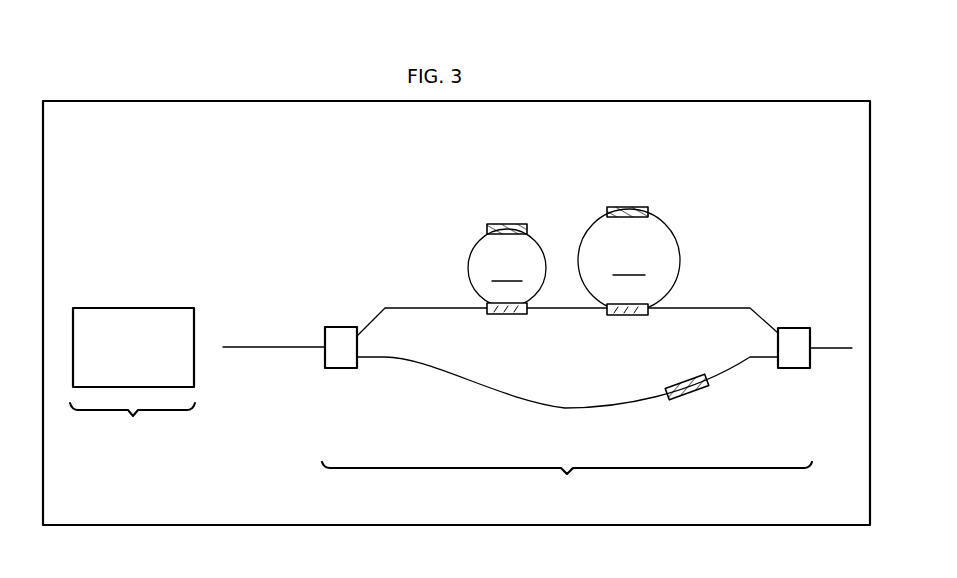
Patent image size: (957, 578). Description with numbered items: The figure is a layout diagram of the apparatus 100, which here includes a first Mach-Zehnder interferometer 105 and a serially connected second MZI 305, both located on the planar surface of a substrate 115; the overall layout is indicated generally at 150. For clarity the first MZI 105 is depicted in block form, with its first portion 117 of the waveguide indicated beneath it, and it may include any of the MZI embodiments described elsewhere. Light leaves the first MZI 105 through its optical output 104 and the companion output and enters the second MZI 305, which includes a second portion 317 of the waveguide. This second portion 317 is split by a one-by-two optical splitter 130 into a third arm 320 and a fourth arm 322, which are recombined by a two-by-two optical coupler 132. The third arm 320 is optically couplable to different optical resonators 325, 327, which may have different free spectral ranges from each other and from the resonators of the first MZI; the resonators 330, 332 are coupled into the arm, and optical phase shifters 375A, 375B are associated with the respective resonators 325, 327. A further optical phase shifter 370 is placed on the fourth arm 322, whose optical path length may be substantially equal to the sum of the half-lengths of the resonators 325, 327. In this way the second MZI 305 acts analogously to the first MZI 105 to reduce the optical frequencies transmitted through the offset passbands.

The optical sensing system 150 is at (263, 57).
The substrate 115 is at (617, 99).
The apparatus 100 is at (183, 169).
The Mach-Zehnder interferometer 105 is at (113, 277).
The first portion of the waveguide 117 is at (132, 422).
The optical output 104 is at (276, 346).
The 1×2 optical splitter 130 is at (340, 369).
The second MZI 305 is at (437, 228).
The third arm 320 is at (366, 320).
The fourth arm 322 is at (570, 410).
The optical resonator 325 is at (507, 268).
The optical resonator 327 is at (629, 260).
The optical phase shifter 375A is at (507, 223).
The optical phase shifter 375B is at (628, 206).
The optical resonator 330 is at (520, 317).
The optical resonator 332 is at (638, 318).
The optical phase shifter 370 is at (690, 392).
The 2×2 optical coupler 132 is at (795, 370).
The second portion of the waveguide 317 is at (567, 482).